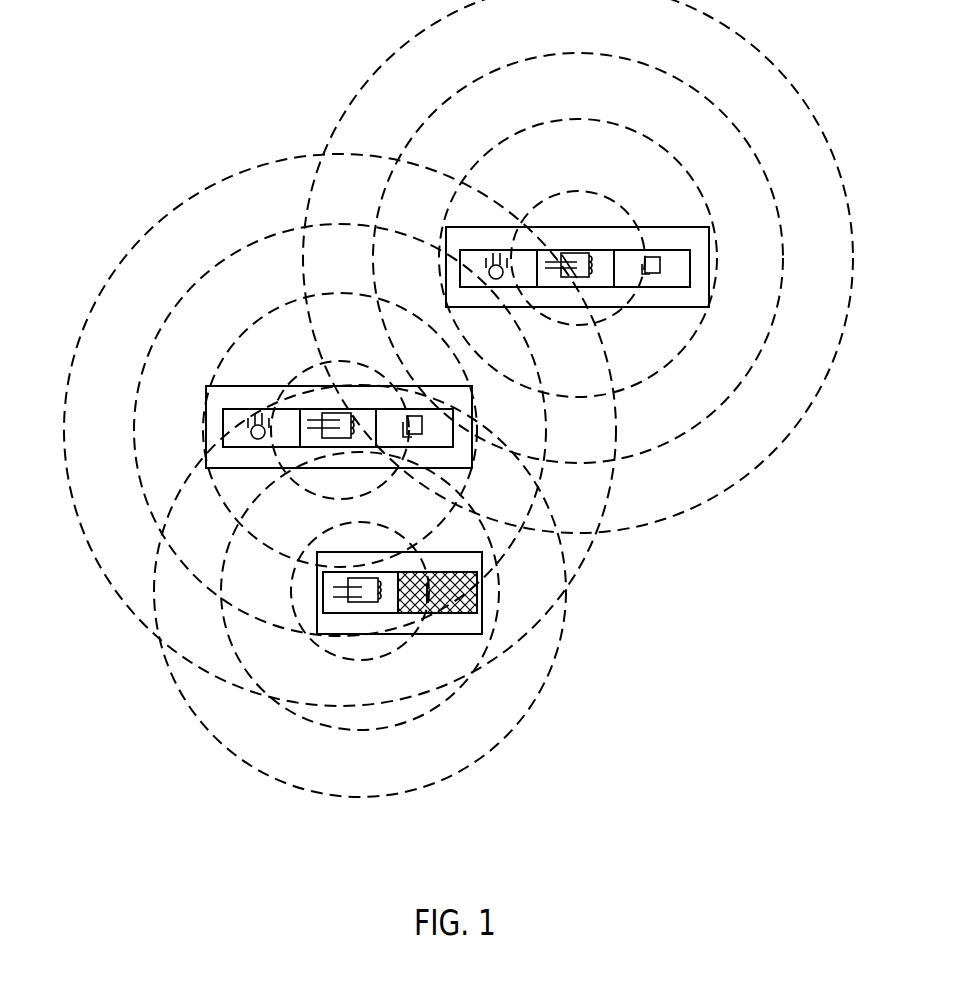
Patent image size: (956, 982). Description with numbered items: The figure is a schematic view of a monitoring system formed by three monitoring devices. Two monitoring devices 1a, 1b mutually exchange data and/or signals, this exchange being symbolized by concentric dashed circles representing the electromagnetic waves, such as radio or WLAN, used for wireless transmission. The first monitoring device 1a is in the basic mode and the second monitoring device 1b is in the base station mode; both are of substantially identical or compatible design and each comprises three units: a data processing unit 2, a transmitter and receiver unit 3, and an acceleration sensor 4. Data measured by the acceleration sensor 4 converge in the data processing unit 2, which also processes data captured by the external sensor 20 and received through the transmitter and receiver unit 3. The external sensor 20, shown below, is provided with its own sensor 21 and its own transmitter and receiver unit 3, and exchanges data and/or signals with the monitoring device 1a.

The first monitoring device 1a is at (200, 427).
The second monitoring device 1b is at (440, 270).
The data processing unit 2 is at (679, 249).
The transmitter and receiver unit 3 is at (600, 249).
The acceleration sensor 4 is at (488, 249).
The external sensor 20 is at (310, 595).
The sensor 21 is at (450, 615).